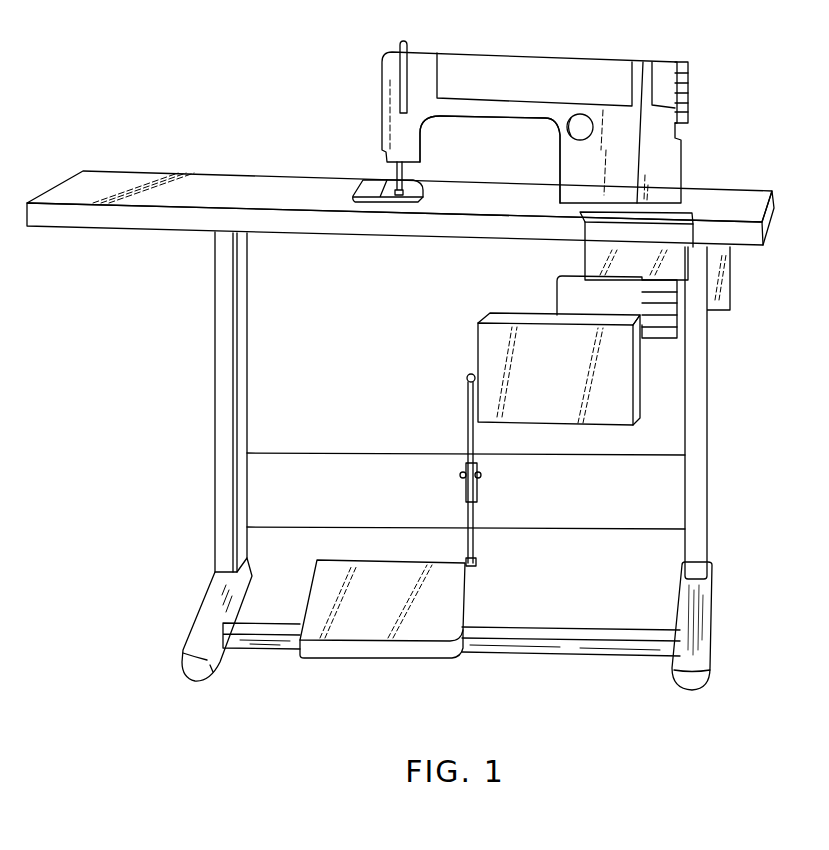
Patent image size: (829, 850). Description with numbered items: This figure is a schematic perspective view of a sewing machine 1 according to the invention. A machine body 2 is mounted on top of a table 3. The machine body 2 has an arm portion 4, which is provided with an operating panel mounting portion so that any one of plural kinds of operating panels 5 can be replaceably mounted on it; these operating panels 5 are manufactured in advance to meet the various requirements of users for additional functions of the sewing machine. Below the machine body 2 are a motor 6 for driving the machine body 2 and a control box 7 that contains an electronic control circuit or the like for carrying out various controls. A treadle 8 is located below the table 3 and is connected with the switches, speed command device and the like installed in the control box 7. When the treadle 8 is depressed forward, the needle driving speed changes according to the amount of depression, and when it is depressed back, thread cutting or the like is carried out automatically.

The sewing machine 1 is at (290, 106).
The machine body 2 is at (516, 110).
The table 3 is at (218, 175).
The arm portion 4 is at (487, 113).
The operating panel 5 is at (560, 63).
The motor 6 is at (557, 295).
The control box 7 is at (478, 327).
The treadle 8 is at (427, 636).